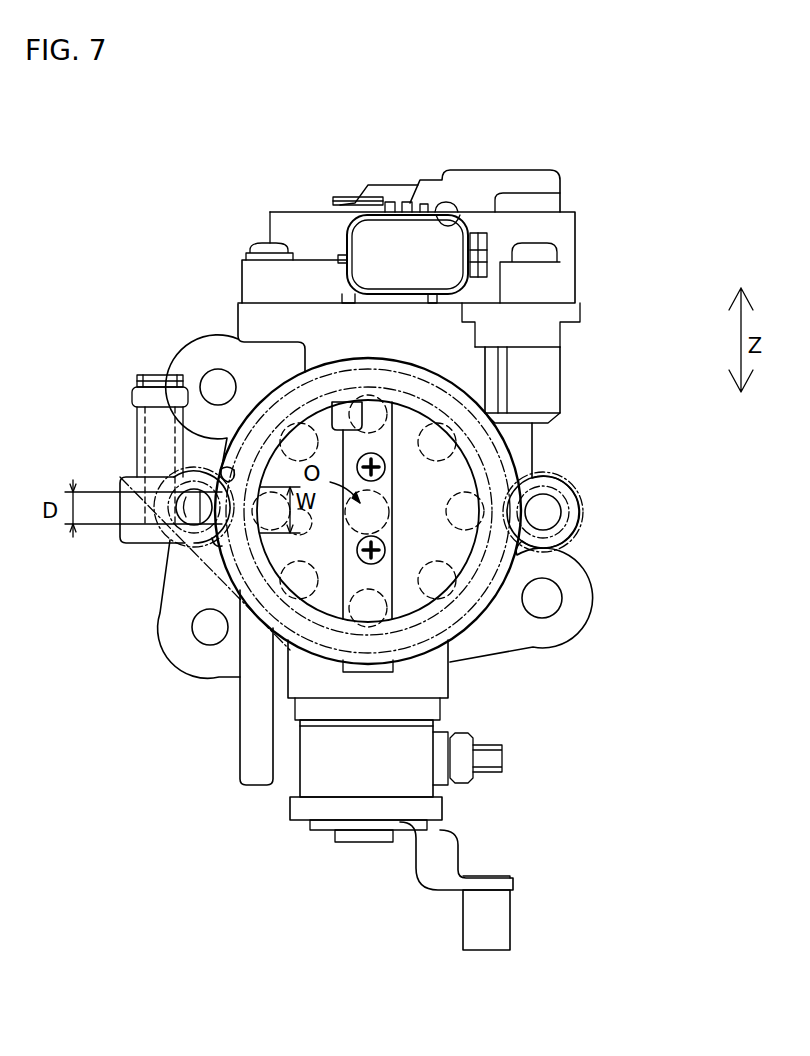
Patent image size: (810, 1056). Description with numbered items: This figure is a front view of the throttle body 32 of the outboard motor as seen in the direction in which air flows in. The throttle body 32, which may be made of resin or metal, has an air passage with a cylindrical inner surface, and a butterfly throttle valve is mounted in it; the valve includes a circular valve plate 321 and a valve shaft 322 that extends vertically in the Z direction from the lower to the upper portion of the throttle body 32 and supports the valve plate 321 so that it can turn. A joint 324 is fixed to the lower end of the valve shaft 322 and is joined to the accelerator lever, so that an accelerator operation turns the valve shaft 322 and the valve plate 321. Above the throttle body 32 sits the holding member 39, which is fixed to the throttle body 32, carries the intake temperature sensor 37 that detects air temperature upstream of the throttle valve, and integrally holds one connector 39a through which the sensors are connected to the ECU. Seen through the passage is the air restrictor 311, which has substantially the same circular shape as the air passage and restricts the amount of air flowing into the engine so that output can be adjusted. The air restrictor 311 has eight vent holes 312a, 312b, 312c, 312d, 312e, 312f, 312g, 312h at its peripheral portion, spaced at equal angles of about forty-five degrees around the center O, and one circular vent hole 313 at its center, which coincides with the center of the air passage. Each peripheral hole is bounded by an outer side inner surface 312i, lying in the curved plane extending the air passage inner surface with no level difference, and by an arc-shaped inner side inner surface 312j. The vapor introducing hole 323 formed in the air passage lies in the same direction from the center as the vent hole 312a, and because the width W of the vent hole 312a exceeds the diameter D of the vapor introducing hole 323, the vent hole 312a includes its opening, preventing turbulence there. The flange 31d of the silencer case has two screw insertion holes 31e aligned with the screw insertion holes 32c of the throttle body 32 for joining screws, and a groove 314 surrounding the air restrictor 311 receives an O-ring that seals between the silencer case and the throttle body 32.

The air restrictor 311 is at (298, 592).
The vent hole 312a is at (265, 530).
The vent hole 312b is at (289, 446).
The vent hole 312c is at (358, 412).
The vent hole 312d is at (452, 448).
The vent hole 312e is at (452, 476).
The vent hole 312f is at (446, 598).
The vent hole 312g is at (362, 615).
The vent hole 312h is at (290, 588).
The outer side inner surface 312i is at (182, 425).
The inner side inner surface 312j is at (316, 537).
The vent hole 313 is at (371, 521).
The groove 314 is at (160, 603).
The flange 31d is at (588, 518).
The screw insertion hole 31e is at (625, 575).
The throttle body 32 is at (498, 585).
The screw insertion hole 32c is at (178, 505).
The valve plate 321 is at (393, 477).
The valve shaft 322 is at (393, 478).
The vapor introducing hole 323 is at (222, 470).
The joint 324 is at (480, 933).
The intake temperature sensor 37 is at (333, 418).
The holding member 39 is at (497, 202).
The connector 39a is at (443, 218).